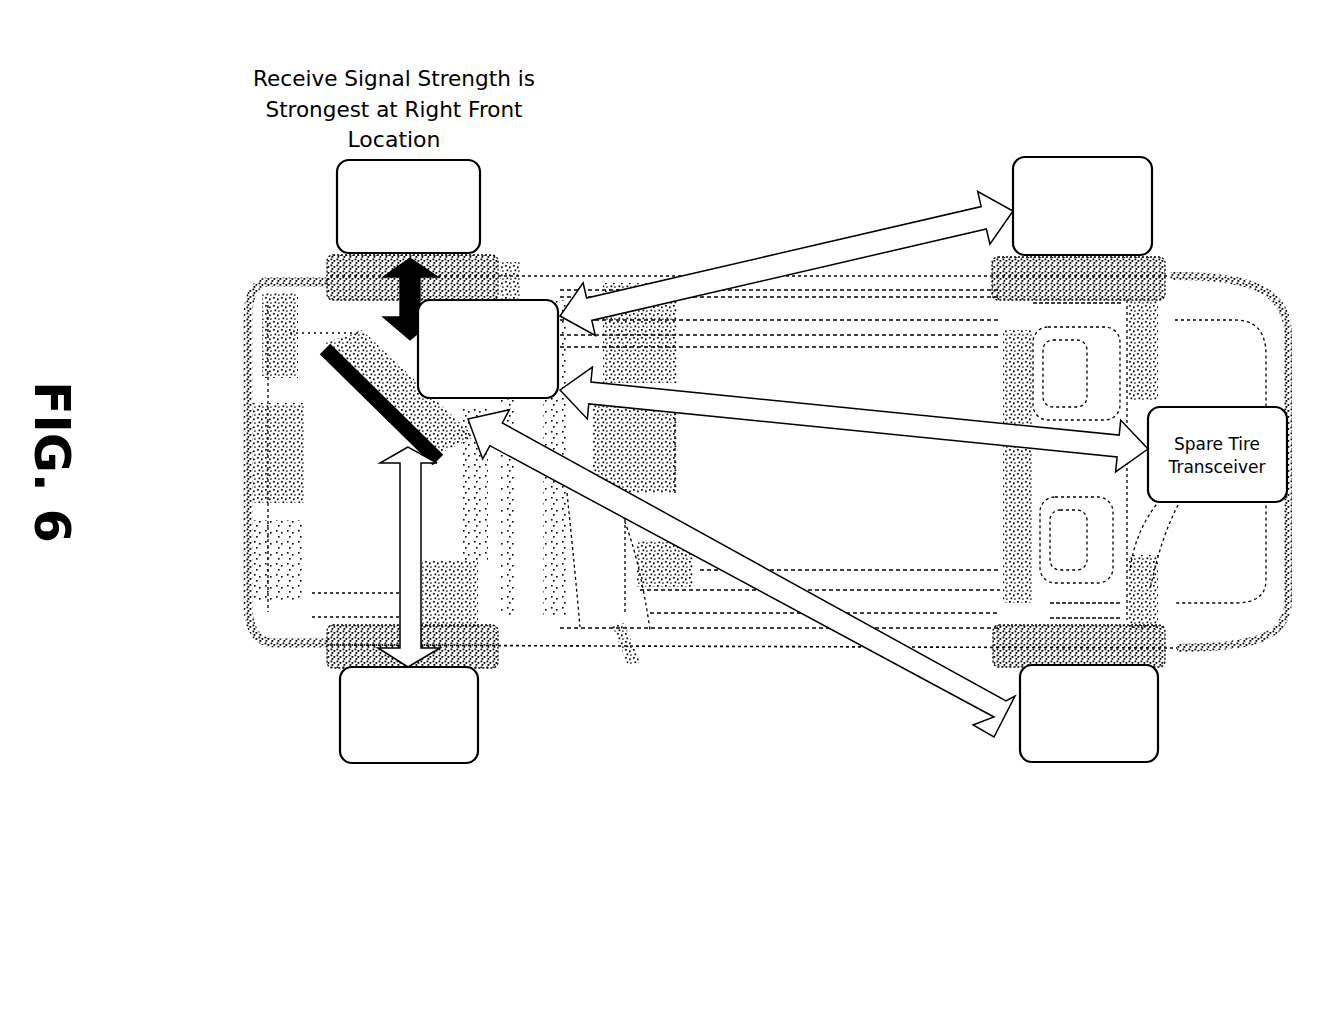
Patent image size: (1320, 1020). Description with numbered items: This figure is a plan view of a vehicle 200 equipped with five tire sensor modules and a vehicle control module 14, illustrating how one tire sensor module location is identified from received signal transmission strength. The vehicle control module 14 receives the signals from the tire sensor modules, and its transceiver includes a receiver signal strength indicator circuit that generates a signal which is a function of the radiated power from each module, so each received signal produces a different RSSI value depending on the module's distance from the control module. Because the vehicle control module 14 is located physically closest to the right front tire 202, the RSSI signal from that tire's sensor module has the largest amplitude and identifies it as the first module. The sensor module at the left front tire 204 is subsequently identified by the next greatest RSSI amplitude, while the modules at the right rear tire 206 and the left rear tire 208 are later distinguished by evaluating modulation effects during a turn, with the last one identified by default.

The vehicle 200 is at (905, 102).
The right front tire 202 is at (482, 256).
The left front tire 204 is at (487, 662).
The right rear tire 206 is at (1150, 256).
The left rear tire 208 is at (1142, 648).
The vehicle control module 14 is at (507, 300).